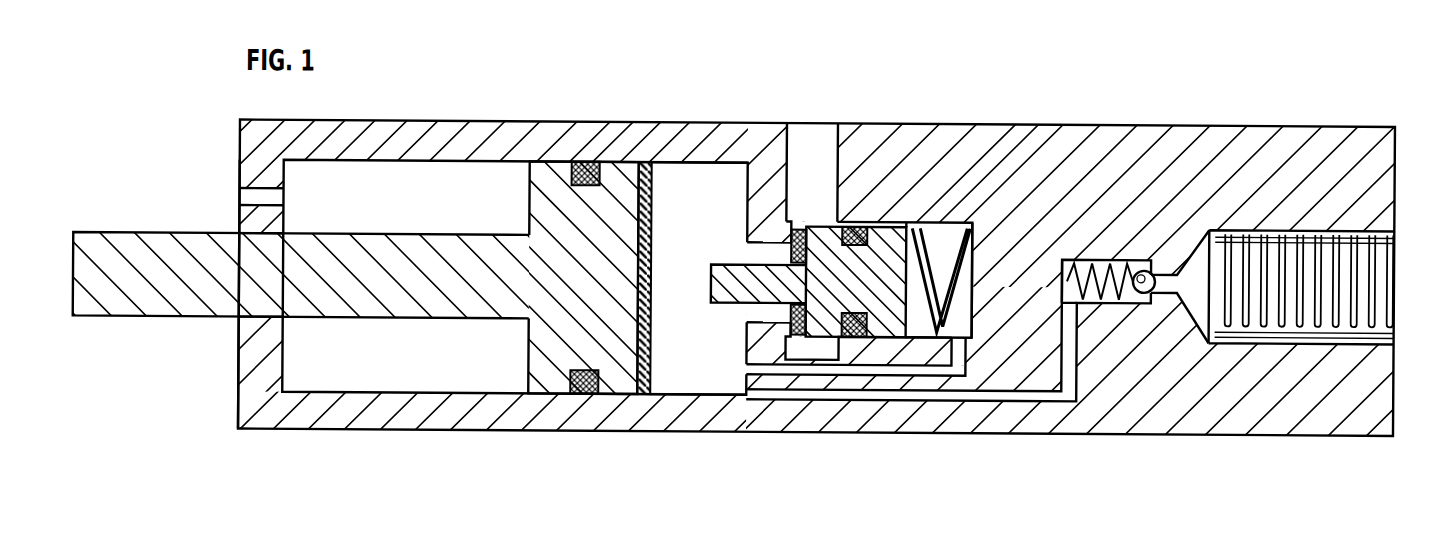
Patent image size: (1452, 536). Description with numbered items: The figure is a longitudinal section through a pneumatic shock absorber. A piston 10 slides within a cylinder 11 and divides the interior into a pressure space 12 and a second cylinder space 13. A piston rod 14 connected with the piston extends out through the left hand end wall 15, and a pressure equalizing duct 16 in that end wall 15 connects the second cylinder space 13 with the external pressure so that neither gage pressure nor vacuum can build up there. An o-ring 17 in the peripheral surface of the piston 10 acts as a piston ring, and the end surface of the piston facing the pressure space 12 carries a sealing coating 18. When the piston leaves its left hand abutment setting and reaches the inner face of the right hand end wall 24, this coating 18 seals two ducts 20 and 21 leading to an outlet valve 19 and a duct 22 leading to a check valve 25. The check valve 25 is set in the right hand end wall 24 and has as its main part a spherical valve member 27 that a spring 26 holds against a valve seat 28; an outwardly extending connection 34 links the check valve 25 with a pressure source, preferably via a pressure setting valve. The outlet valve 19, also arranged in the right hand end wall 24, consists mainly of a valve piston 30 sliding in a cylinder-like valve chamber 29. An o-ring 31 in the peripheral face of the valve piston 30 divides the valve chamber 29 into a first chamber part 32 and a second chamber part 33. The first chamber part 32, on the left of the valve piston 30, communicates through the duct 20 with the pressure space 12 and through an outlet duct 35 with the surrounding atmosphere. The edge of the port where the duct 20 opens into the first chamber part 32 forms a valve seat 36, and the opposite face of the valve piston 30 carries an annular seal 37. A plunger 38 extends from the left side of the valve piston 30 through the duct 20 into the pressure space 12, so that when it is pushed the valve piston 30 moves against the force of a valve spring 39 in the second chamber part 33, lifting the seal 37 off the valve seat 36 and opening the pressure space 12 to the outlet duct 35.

The piston 10 is at (567, 351).
The cylinder 11 is at (522, 126).
The pressure space 12 is at (698, 203).
The second cylinder space 13 is at (388, 210).
The piston rod 14 is at (150, 244).
The end wall 15 is at (248, 365).
The pressure equalizing duct 16 is at (253, 197).
The o-ring 17 is at (586, 164).
The sealing coating 18 is at (653, 175).
The outlet valve 19 is at (918, 207).
The duct 20 is at (748, 250).
The duct 21 is at (750, 367).
The duct 22 is at (998, 389).
The right hand end wall 24 is at (1283, 413).
The check valve 25 is at (1108, 252).
The spring 26 is at (1105, 297).
The ball 27 is at (1150, 264).
The valve seat 28 is at (1165, 289).
The valve chamber 29 is at (896, 332).
The valve piston 30 is at (877, 221).
The o-ring 31 is at (858, 332).
The first chamber part 32 is at (812, 341).
The second chamber part 33 is at (952, 230).
The connection 34 is at (1382, 255).
The outlet duct 35 is at (822, 141).
The valve seat 36 is at (790, 310).
The annular seal 37 is at (790, 218).
The plunger 38 is at (722, 287).
The valve spring 39 is at (928, 326).